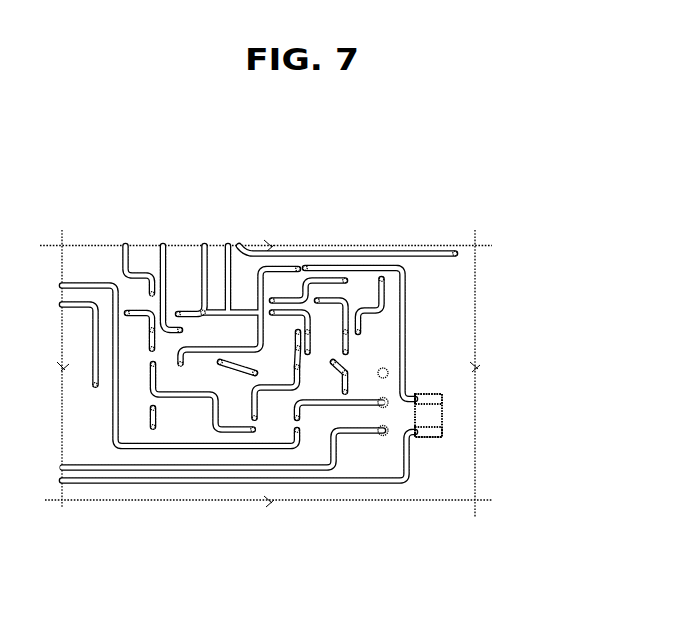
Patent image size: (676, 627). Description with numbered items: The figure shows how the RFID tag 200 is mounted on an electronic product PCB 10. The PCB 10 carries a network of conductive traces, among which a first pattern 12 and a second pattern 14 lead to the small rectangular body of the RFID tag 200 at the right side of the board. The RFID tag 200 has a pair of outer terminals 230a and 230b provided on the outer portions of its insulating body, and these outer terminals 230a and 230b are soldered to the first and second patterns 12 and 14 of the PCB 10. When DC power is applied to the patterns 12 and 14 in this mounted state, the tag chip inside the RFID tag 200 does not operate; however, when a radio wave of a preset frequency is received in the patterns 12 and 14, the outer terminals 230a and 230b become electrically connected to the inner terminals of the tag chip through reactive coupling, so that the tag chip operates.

The electronic product PCB 10 is at (305, 407).
The first pattern 12 is at (360, 333).
The second pattern 14 is at (238, 456).
The RFID tag 200 is at (492, 405).
The outer terminal 230a is at (441, 437).
The outer terminal 230b is at (437, 395).